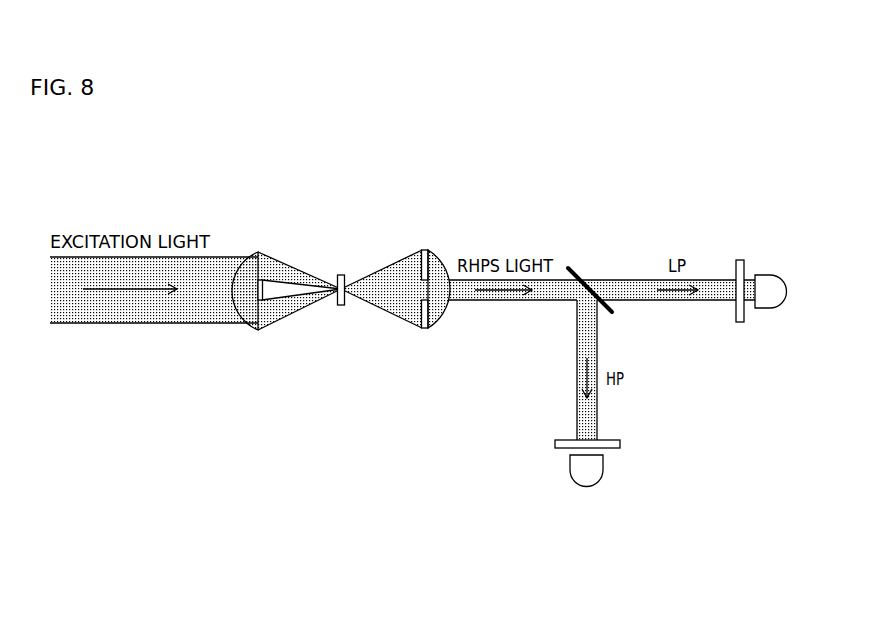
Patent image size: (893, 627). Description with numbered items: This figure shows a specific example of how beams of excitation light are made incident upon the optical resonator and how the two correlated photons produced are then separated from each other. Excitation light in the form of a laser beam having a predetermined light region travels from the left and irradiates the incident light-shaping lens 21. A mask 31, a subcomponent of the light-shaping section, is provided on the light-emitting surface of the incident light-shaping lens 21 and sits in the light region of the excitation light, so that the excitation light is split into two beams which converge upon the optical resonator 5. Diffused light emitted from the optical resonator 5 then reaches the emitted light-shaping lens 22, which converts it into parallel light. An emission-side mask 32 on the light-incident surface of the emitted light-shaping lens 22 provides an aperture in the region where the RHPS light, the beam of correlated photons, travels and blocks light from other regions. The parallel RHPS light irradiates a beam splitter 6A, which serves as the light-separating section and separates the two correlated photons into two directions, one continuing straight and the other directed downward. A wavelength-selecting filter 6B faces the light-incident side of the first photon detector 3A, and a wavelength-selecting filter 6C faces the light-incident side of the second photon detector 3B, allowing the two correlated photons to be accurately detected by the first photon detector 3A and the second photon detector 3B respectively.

The incident light-shaping lens 21 is at (258, 250).
The mask 31 is at (263, 300).
The optical resonator 5 is at (341, 273).
The emission-side mask 32 is at (421, 250).
The emitted light-shaping lens 22 is at (434, 251).
The beam splitter 6A is at (570, 266).
The wavelength-selecting filter 6B is at (740, 259).
The first photon detector 3A is at (764, 274).
The wavelength-selecting filter 6C is at (621, 444).
The second photon detector 3B is at (587, 487).